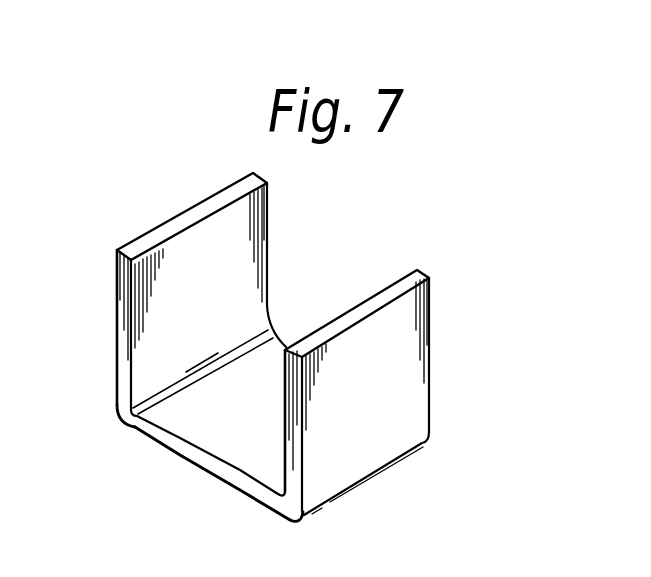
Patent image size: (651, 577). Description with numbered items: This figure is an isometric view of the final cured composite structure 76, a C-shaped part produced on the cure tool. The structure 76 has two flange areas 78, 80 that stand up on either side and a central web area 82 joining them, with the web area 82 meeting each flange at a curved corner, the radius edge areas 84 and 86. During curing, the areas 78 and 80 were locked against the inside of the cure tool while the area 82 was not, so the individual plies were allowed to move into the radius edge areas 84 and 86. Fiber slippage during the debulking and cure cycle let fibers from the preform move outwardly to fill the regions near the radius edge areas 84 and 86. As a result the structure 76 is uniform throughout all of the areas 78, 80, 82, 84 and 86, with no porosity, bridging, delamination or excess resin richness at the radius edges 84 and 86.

The final cured composite structure 76 is at (260, 354).
The area 78 is at (395, 277).
The area 80 is at (116, 320).
The area 82 is at (237, 449).
The radius edge area 84 is at (307, 525).
The radius edge area 86 is at (123, 423).